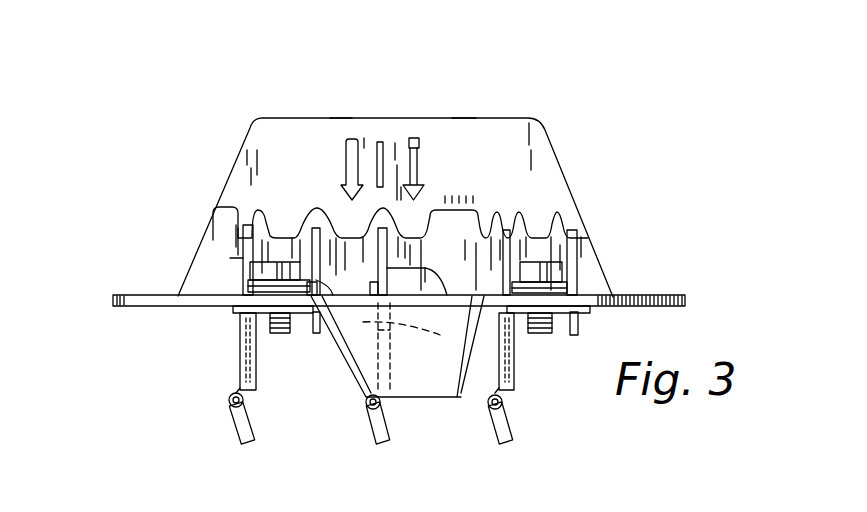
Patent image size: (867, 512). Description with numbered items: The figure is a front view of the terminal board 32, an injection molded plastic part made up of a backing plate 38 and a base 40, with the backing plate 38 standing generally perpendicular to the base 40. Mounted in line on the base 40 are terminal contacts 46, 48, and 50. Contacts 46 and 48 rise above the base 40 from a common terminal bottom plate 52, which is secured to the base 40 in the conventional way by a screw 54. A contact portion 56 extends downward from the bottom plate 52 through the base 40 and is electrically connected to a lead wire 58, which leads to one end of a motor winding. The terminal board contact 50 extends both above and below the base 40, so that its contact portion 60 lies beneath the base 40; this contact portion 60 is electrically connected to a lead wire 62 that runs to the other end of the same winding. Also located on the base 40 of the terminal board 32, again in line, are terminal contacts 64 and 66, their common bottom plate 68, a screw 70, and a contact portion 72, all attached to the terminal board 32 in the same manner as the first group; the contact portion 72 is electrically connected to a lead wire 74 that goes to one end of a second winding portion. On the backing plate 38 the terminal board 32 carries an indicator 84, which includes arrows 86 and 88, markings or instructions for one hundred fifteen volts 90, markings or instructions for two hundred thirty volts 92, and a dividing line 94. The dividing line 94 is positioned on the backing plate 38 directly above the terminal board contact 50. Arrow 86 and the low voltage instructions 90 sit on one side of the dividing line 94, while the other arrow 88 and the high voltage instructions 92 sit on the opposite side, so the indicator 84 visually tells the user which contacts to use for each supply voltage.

The terminal board 32 is at (683, 295).
The backing plate 38 is at (540, 142).
The base 40 is at (127, 294).
The terminal contact 46 is at (243, 264).
The terminal contact 48 is at (330, 330).
The terminal board contact 50 is at (410, 317).
The common terminal bottom plate 52 is at (313, 320).
The screw 54 is at (277, 262).
The contact portion 56 is at (248, 313).
The lead wire 58 is at (230, 408).
The contact portion 60 is at (416, 346).
The lead wire 62 is at (366, 422).
The terminal contact 64 is at (505, 247).
The terminal contact 66 is at (578, 243).
The common bottom plate 68 is at (573, 290).
The screw 70 is at (532, 265).
The contact portion 72 is at (545, 333).
The lead wire 74 is at (488, 420).
The indicator 84 is at (341, 125).
The arrow 86 is at (352, 137).
The arrow 88 is at (413, 137).
The markings or instructions for 115 volts 90 is at (262, 140).
The markings or instructions for 230 volts 92 is at (492, 148).
The dividing line 94 is at (372, 193).